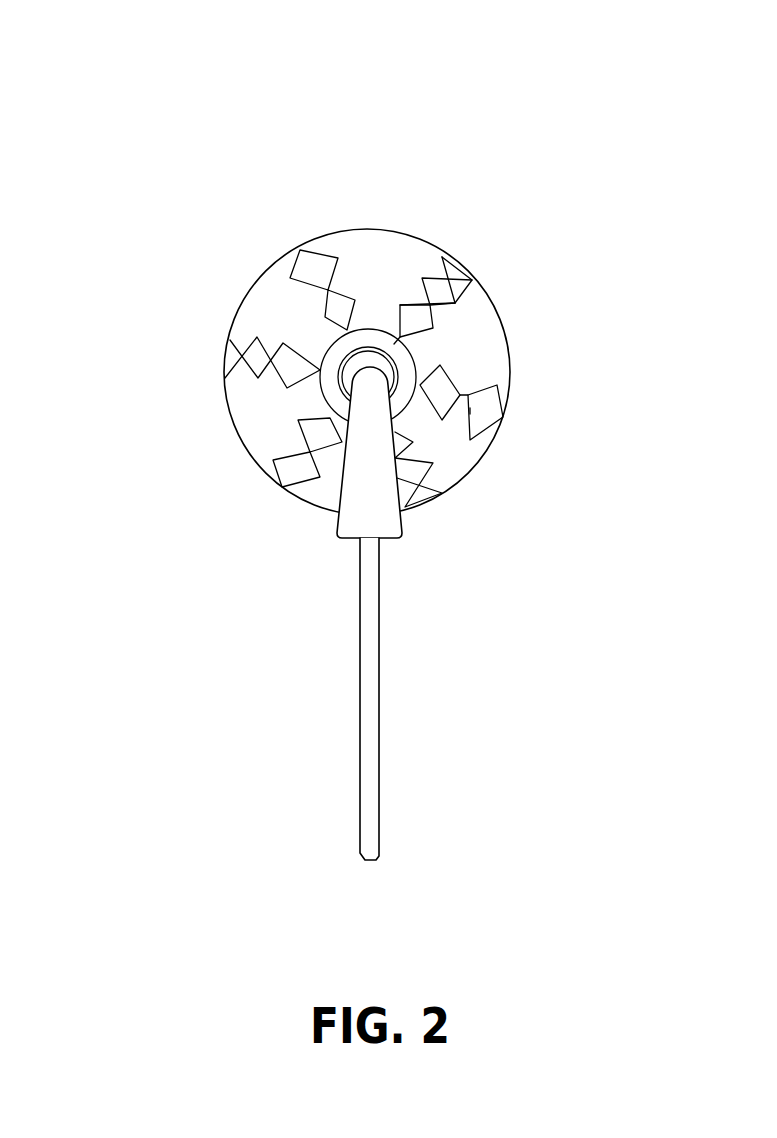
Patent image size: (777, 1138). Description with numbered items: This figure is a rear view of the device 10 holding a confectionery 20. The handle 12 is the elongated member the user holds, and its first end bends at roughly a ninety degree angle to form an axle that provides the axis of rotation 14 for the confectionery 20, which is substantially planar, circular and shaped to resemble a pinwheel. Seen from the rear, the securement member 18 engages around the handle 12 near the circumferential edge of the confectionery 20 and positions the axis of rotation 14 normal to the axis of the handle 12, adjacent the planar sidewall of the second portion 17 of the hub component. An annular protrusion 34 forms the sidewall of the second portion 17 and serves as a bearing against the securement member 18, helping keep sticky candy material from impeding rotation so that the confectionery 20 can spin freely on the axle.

The device 10 is at (158, 105).
The handle 12 is at (375, 750).
The axis of rotation 14 is at (378, 369).
The second portion of the hub component 17 is at (320, 369).
The securement member 18 is at (372, 508).
The confectionery 20 is at (400, 238).
The annular protrusion 34 is at (378, 371).